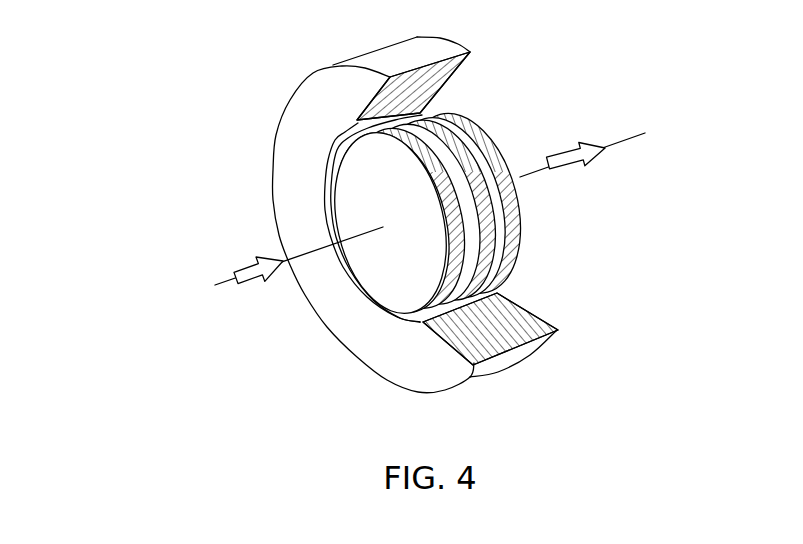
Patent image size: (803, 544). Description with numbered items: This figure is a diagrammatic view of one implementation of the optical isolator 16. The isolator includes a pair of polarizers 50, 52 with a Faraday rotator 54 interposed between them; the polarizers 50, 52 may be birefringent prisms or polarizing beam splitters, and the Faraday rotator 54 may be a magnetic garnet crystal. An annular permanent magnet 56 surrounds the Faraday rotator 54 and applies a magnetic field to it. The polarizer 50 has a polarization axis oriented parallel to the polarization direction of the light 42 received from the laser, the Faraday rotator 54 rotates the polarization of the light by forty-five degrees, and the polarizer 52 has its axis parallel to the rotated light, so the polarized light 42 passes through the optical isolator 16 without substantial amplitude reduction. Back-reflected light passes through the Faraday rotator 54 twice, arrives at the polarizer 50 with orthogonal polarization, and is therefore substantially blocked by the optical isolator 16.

The optical isolator 16 is at (582, 62).
The light 42 is at (218, 284).
The polarizer 50 is at (345, 178).
The polarizer 52 is at (522, 227).
The Faraday rotator 54 is at (468, 155).
The annular permanent magnet 56 is at (537, 317).